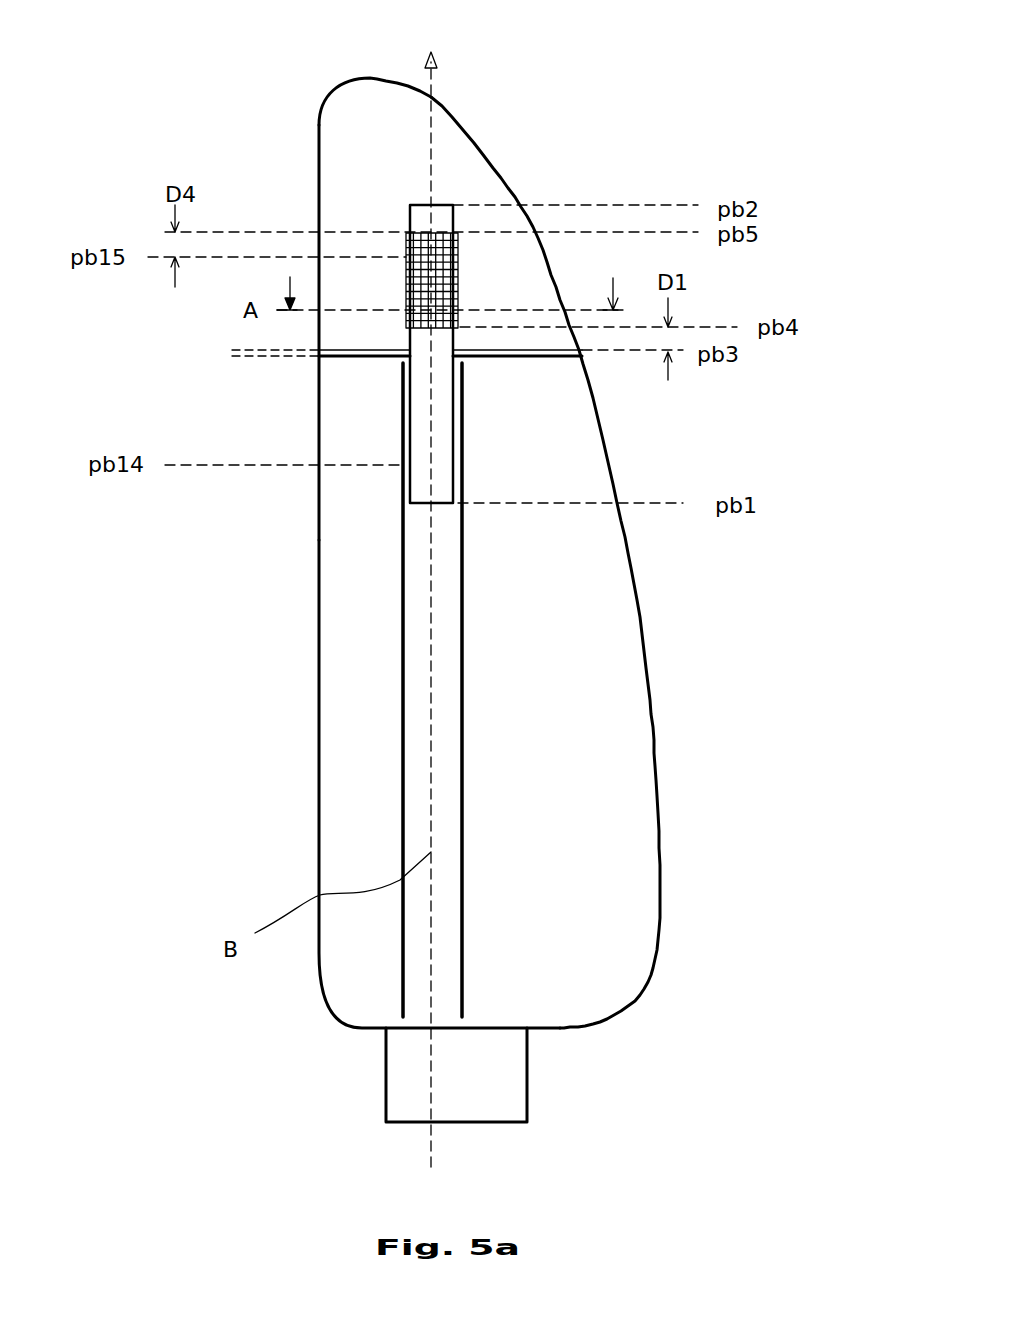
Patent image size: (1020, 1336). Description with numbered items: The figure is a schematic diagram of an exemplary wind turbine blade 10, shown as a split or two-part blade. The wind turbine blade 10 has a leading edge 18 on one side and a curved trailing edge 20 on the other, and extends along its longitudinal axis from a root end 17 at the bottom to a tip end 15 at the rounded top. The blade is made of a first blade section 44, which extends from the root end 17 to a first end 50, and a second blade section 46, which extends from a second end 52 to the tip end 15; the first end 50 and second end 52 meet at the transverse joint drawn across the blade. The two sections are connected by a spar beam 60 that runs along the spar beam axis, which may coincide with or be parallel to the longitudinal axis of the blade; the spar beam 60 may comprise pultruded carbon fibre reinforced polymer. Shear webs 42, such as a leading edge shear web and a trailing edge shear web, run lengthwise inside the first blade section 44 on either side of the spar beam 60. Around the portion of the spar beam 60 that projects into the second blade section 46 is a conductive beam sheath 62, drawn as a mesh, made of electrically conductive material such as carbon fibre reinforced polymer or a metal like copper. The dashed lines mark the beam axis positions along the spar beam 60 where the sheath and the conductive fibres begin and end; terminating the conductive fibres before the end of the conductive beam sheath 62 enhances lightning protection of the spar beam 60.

The wind turbine blade 10 is at (510, 97).
The tip end 15 is at (368, 74).
The root end 17 is at (503, 1125).
The leading edge 18 is at (318, 757).
The trailing edge 20 is at (652, 740).
The shear webs 42 is at (405, 922).
The first blade section 44 is at (252, 645).
The second blade section 46 is at (277, 170).
The first end 50 is at (262, 357).
The second end 52 is at (262, 352).
The spar beam 60 is at (440, 217).
The conductive beam sheath 62 is at (410, 230).